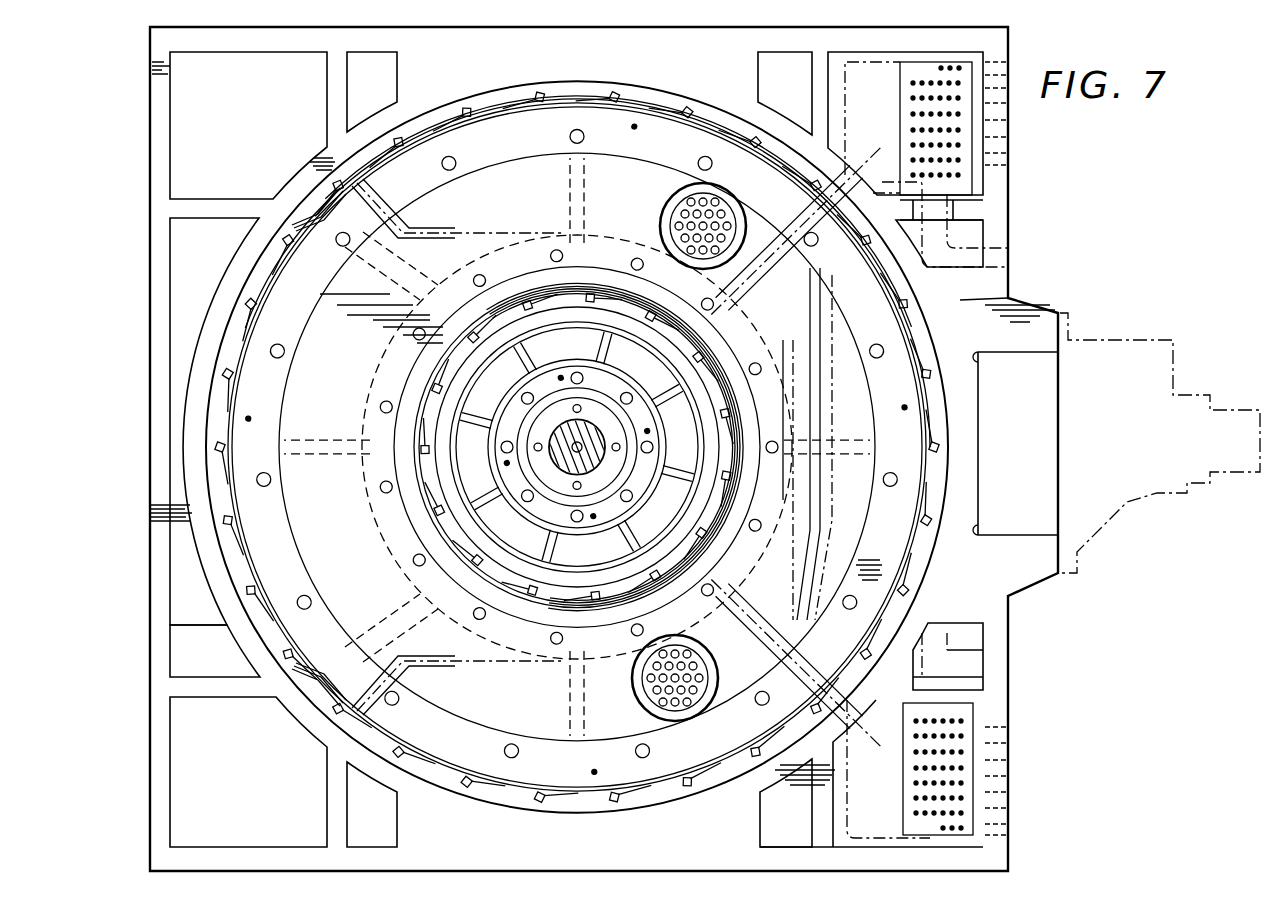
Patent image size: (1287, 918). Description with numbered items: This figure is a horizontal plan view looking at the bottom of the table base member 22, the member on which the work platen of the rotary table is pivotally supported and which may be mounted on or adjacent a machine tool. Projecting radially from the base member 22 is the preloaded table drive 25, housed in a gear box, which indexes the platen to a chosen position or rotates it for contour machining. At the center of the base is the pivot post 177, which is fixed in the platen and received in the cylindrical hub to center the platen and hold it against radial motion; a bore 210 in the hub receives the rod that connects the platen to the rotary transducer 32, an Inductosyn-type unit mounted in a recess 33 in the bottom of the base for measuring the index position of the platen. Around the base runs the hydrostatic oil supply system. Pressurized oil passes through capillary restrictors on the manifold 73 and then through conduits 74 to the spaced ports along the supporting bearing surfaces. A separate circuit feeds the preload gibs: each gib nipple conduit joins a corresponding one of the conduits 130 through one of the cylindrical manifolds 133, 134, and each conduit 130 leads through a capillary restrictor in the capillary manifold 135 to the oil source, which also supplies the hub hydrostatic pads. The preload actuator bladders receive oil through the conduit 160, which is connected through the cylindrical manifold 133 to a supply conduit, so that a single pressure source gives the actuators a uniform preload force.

The base member 22 is at (1022, 272).
The table drive 25 is at (1190, 359).
The manifold 73 is at (921, 67).
The capillary manifold 135 is at (970, 722).
The conduit 160 is at (980, 612).
The conduits 130 is at (780, 332).
The cylindrical manifold 133 is at (690, 705).
The cylindrical manifold 134 is at (670, 218).
The conduits 74 is at (536, 248).
The pivot post 177 is at (586, 426).
The bore 210 is at (586, 446).
The rotary transducer 32 is at (560, 488).
The recess 33 is at (628, 468).